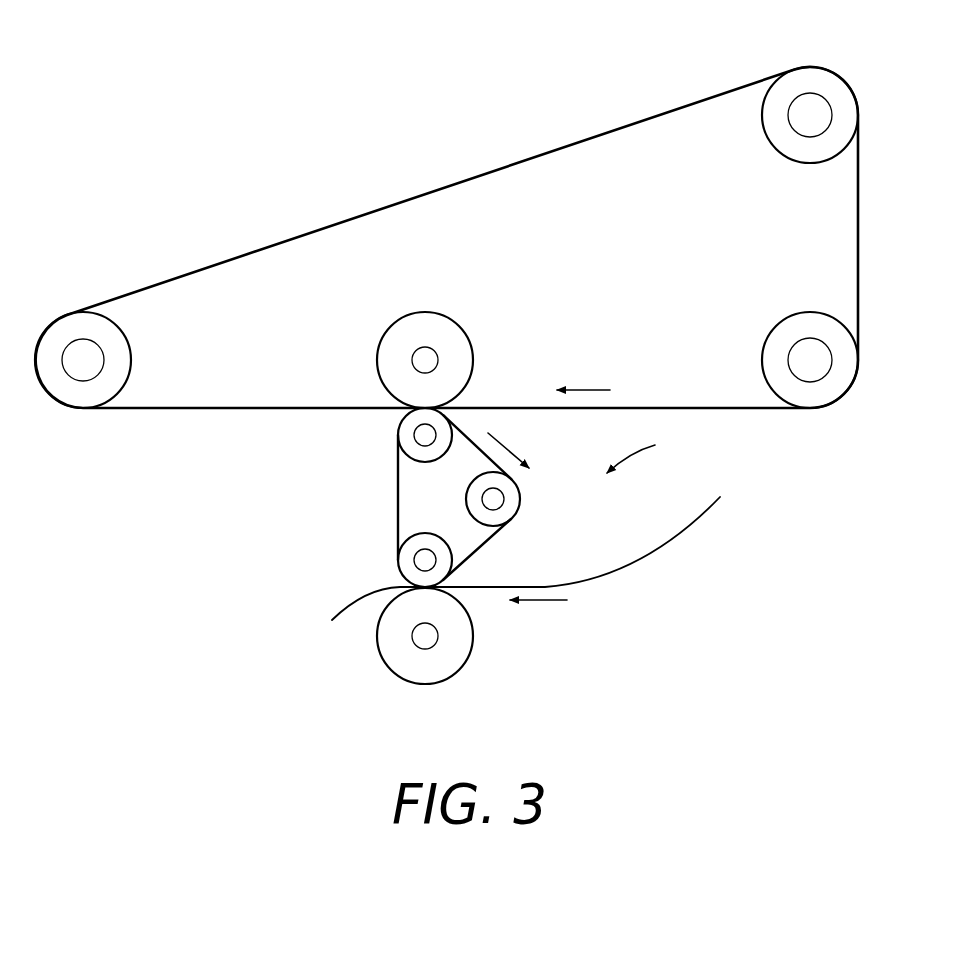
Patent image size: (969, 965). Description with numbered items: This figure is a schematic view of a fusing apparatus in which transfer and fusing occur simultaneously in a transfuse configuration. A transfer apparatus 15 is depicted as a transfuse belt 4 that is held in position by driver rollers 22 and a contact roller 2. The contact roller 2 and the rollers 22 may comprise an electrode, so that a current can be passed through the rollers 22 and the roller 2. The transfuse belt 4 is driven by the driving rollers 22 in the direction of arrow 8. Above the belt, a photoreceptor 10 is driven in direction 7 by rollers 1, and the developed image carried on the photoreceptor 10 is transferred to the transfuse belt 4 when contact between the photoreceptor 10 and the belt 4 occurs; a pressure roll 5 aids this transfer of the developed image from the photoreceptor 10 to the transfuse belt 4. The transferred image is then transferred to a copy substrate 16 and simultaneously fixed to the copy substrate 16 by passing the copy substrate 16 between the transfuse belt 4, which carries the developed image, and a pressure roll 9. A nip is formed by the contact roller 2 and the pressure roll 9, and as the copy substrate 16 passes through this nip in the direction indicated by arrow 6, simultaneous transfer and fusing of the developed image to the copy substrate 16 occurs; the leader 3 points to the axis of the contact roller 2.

The rollers 1 is at (53, 338).
The contact roller 2 is at (398, 574).
The roller axis 3 is at (423, 558).
The transfuse belt 4 is at (398, 471).
The pressure roll 5 is at (450, 333).
The web transport direction arrow 6 is at (538, 601).
The direction 7 is at (585, 388).
The arrow 8 is at (520, 452).
The pressure roll 9 is at (415, 672).
The photoreceptor 10 is at (188, 411).
The transfer apparatus 15 is at (687, 455).
The copy substrate 16 is at (653, 547).
The driver rollers 22 is at (398, 428).